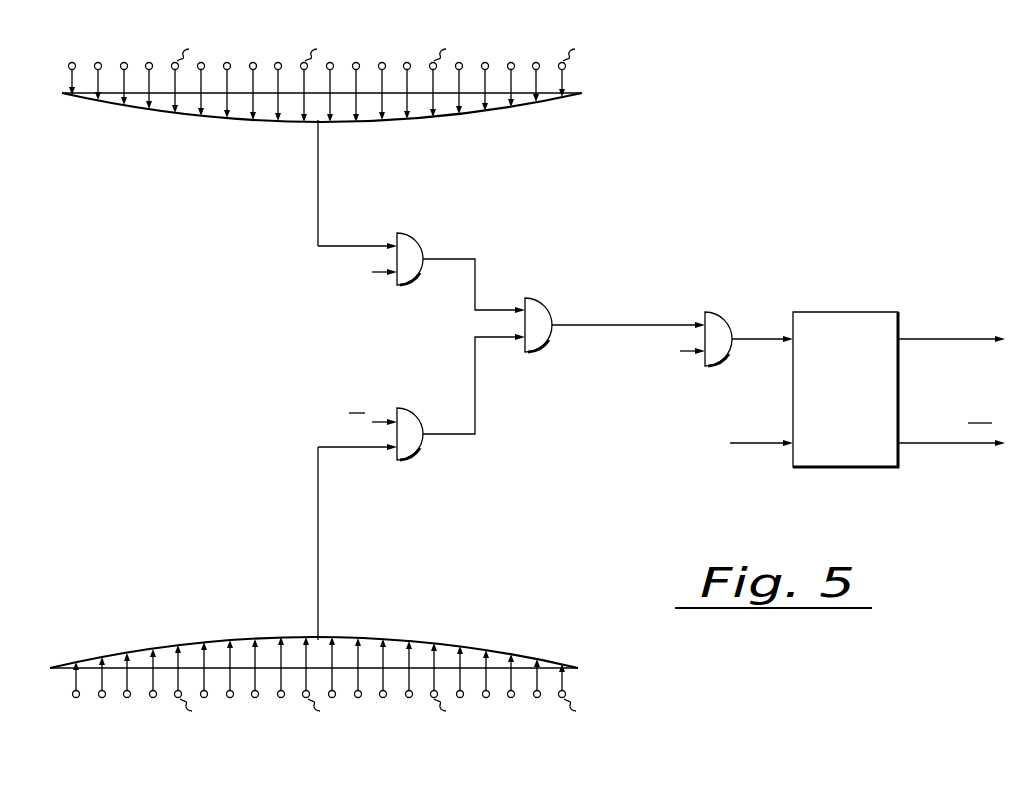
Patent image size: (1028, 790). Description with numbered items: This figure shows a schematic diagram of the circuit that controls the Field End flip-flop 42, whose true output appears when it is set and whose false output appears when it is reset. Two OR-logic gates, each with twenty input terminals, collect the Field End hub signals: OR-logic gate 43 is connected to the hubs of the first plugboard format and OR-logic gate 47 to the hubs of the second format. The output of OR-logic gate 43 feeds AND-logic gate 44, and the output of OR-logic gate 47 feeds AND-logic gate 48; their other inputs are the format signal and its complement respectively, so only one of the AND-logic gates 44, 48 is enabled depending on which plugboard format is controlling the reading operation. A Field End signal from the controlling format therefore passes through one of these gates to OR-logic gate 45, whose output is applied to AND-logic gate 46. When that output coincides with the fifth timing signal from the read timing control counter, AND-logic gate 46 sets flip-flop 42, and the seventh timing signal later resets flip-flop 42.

The Field End flip-flop 42 is at (816, 311).
The OR-logic gate 43 is at (446, 108).
The AND-logic gate 44 is at (418, 254).
The OR-logic gate 45 is at (546, 319).
The AND-logic gate 46 is at (726, 333).
The OR-logic gate 47 is at (428, 646).
The AND-logic gate 48 is at (418, 429).